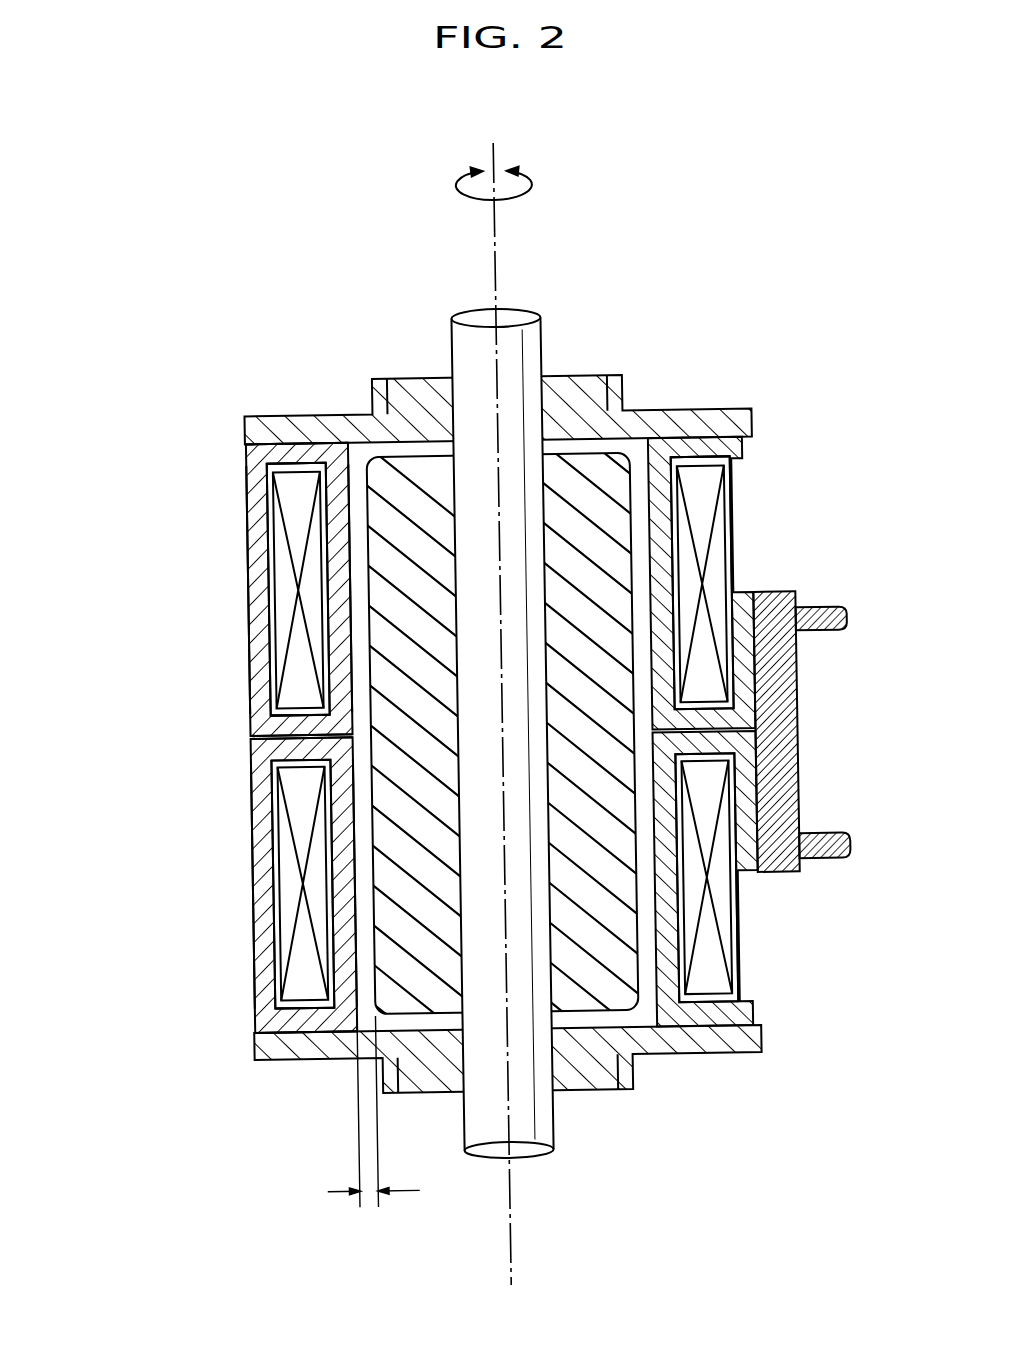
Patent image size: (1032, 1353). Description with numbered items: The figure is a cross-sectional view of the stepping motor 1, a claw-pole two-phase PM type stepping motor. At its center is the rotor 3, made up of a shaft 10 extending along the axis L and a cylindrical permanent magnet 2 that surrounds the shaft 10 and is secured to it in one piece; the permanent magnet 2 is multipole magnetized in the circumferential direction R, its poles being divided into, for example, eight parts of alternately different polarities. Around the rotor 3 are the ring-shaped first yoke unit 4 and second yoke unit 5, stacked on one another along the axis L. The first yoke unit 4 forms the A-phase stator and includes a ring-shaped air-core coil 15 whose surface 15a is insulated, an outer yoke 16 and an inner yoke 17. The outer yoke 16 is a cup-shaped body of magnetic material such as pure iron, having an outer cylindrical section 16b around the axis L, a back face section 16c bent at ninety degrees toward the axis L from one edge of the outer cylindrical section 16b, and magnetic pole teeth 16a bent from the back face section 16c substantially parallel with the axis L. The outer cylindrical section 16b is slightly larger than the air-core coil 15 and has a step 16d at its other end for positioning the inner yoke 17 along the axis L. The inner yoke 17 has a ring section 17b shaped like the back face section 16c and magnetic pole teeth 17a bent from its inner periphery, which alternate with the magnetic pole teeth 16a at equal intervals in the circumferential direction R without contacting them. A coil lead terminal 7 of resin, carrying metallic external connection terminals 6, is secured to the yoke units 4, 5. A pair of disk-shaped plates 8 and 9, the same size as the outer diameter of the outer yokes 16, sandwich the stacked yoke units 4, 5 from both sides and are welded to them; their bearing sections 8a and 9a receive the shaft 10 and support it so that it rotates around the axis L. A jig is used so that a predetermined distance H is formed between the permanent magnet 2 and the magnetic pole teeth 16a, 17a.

The stepping motor 1 is at (788, 211).
The permanent magnet 2 is at (605, 479).
The rotor 3 is at (571, 312).
The first yoke unit 4 is at (93, 466).
The second yoke unit 5 is at (93, 855).
The external connection terminals 6 is at (849, 623).
The coil lead terminal 7 is at (804, 598).
The plate 8 is at (740, 417).
The bearing section 8a is at (573, 384).
The plate 9 is at (732, 1044).
The bearing section 9a is at (574, 1068).
The shaft 10 is at (473, 357).
The air-core coil 15 is at (287, 569).
The surface 15a is at (287, 580).
The outer yoke 16 is at (250, 521).
The magnetic pole teeth 16a is at (343, 638).
The outer cylindrical section 16b is at (259, 609).
The back face section 16c is at (252, 746).
The step 16d is at (269, 452).
The inner yoke 17 is at (283, 470).
The magnetic pole teeth 17a is at (663, 505).
The ring section 17b is at (312, 440).
The axis L is at (506, 160).
The circumferential direction R is at (538, 184).
The predetermined distance H is at (360, 1203).